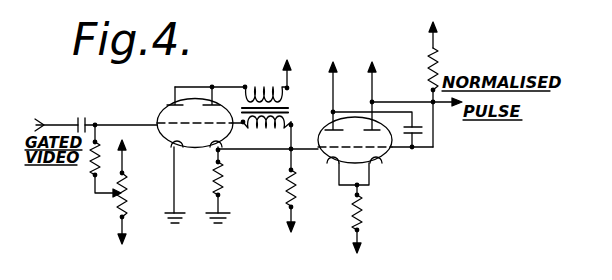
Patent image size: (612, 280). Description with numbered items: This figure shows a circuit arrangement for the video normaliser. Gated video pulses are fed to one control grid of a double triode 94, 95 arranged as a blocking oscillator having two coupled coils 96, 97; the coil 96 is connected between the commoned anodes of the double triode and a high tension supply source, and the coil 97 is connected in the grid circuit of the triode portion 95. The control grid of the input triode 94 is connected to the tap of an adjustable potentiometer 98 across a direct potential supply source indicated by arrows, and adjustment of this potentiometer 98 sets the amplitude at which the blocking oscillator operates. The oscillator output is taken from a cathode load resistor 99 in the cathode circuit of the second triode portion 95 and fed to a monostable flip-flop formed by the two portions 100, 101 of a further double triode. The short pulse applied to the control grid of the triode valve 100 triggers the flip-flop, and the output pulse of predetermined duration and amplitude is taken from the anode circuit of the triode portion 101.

The input triode portion of double triode 94 is at (163, 103).
The second triode portion of double triode 95 is at (230, 136).
The coil 96 is at (253, 86).
The coil 97 is at (292, 121).
The adjustable potentiometer 98 is at (133, 176).
The cathode load resistor 99 is at (222, 185).
The triode valve of flip-flop 100 is at (320, 157).
The triode portion of flip-flop 101 is at (385, 155).